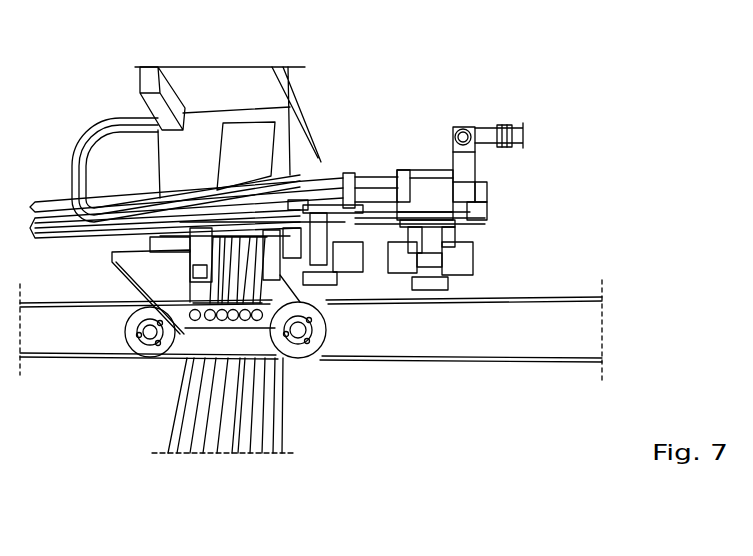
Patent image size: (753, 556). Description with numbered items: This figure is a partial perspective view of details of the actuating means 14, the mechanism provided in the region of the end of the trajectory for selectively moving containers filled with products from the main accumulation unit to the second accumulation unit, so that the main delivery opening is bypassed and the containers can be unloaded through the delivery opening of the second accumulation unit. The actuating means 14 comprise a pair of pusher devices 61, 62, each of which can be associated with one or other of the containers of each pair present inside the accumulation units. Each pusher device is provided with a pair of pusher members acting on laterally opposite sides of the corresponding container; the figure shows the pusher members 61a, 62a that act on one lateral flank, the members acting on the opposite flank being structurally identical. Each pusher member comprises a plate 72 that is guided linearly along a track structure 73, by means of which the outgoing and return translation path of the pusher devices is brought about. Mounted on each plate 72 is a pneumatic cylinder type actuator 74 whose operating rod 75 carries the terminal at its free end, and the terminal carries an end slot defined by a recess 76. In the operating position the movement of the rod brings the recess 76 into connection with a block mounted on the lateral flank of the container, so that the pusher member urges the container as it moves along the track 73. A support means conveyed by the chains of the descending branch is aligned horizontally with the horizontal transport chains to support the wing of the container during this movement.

The actuating means 14 is at (414, 158).
The pusher device 61 is at (505, 210).
The pusher member 61a is at (479, 271).
The pusher device 62 is at (262, 240).
The pusher member 62a is at (362, 280).
The plate 72 is at (317, 210).
The track structure 73 is at (53, 200).
The pneumatic cylinder type actuator 74 is at (204, 298).
The operating rod 75 is at (275, 282).
The recess 76 is at (271, 455).